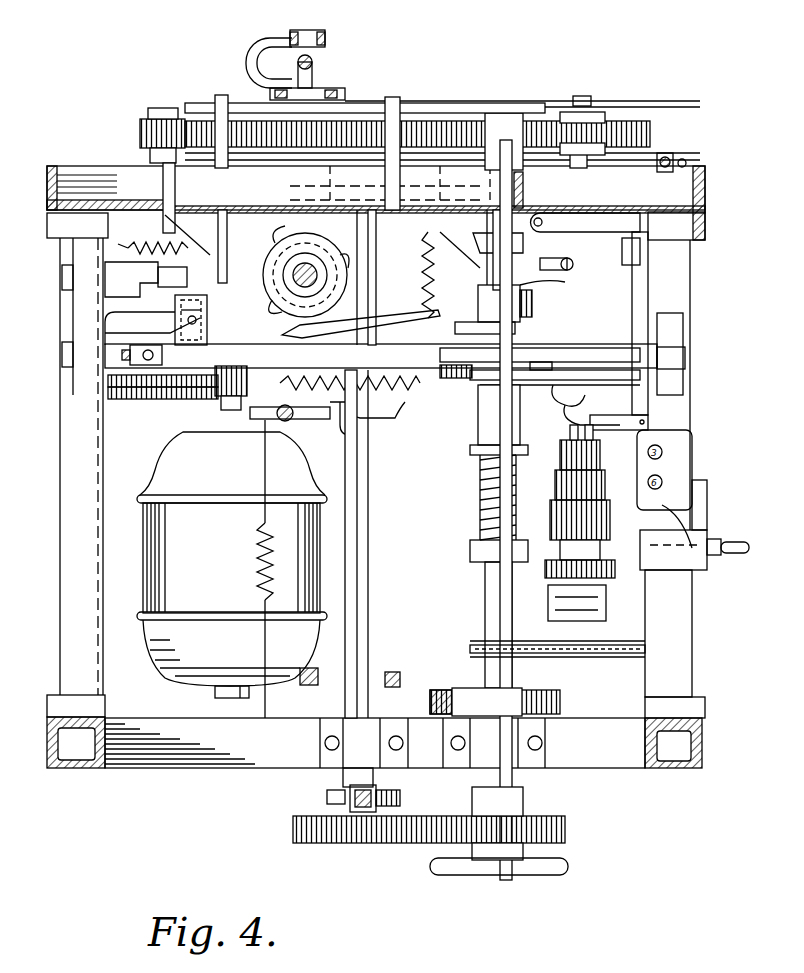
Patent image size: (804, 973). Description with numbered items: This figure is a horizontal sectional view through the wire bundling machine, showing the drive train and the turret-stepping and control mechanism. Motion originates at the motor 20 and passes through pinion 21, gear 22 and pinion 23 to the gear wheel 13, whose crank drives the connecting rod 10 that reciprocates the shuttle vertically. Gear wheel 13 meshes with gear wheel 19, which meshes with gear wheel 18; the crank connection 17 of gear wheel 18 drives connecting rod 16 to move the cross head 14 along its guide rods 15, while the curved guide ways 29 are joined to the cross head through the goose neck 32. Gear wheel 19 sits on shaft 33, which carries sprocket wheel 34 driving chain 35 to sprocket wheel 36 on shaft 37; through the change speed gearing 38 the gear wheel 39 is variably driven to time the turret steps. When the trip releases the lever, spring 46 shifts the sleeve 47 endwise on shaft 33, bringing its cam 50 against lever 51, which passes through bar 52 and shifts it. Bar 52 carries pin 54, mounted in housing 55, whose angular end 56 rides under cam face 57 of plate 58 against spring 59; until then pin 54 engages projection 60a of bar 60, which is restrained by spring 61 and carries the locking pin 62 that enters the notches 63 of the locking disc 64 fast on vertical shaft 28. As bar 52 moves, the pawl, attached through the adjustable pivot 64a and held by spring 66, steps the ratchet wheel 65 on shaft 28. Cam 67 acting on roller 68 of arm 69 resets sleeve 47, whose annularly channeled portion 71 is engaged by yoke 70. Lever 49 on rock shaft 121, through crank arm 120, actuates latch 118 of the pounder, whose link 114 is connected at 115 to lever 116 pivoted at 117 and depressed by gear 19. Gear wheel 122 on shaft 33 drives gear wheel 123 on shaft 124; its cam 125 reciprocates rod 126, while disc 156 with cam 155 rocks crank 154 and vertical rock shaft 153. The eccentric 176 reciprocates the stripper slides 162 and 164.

The connecting rod 10 is at (312, 64).
The gear wheel 13 is at (200, 108).
The cross head 14 is at (345, 96).
The guide rods 15 is at (221, 95).
The connecting rod 16 is at (466, 103).
The crank connection 17 is at (582, 96).
The gear wheel 18 is at (632, 124).
The gear wheel 19 is at (440, 124).
The motor 20 is at (232, 569).
The pinion 21 is at (225, 398).
The gear 22 is at (168, 400).
The pinion 23 is at (142, 130).
The vertical shaft 28 is at (320, 280).
The curved guide ways 29 is at (310, 30).
The goose neck 32 is at (250, 52).
The shaft 33 is at (488, 598).
The sprocket wheel 34 is at (478, 650).
The chain 35 is at (549, 654).
The sprocket wheel 36 is at (612, 658).
The shaft 37 is at (560, 618).
The change speed gearing 38 is at (580, 508).
The gear wheel 39 is at (456, 380).
The spring 46 is at (480, 497).
The sleeve 47 is at (480, 418).
The lever 49 is at (560, 402).
The cam 50 is at (552, 370).
The lever 51 is at (550, 348).
The bar 52 is at (600, 346).
The pin 54 is at (205, 292).
The housing 55 is at (200, 310).
The angular end 56 is at (200, 320).
The cam face 57 is at (140, 328).
The plate 58 is at (130, 330).
The spring 59 is at (165, 340).
The bar 60 is at (131, 278).
The projection 60a is at (176, 266).
The spring 61 is at (145, 244).
The locking pin 62 is at (228, 258).
The notches 63 is at (395, 352).
The locking disc 64 is at (350, 373).
The adjustable pivot 64a is at (150, 388).
The ratchet wheel 65 is at (330, 262).
The spring 66 is at (434, 270).
The cam 67 is at (540, 235).
The roller 68 is at (573, 262).
The arm 69 is at (566, 282).
The yoke 70 is at (532, 298).
The annularly channeled portion 71 is at (479, 331).
The link 114 is at (682, 158).
The connection 115 is at (662, 152).
The lever 116 is at (543, 150).
The pivot 117 is at (172, 120).
The latch 118 is at (546, 212).
The crank arm 120 is at (610, 212).
The rock shaft 121 is at (648, 290).
The gear wheel 122 is at (505, 858).
The gear wheel 123 is at (402, 843).
The shaft 124 is at (358, 552).
The cam 125 is at (400, 796).
The rod 126 is at (360, 808).
The vertical rock shaft 153 is at (290, 422).
The crank 154 is at (330, 416).
The cam 155 is at (352, 438).
The disc 156 is at (395, 412).
The vertical slide 162 is at (304, 686).
The vertical slide 164 is at (394, 670).
The eccentric 176 is at (545, 702).